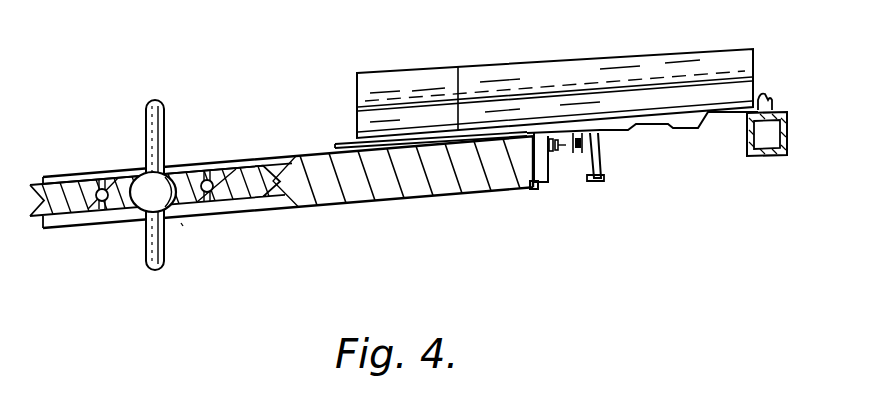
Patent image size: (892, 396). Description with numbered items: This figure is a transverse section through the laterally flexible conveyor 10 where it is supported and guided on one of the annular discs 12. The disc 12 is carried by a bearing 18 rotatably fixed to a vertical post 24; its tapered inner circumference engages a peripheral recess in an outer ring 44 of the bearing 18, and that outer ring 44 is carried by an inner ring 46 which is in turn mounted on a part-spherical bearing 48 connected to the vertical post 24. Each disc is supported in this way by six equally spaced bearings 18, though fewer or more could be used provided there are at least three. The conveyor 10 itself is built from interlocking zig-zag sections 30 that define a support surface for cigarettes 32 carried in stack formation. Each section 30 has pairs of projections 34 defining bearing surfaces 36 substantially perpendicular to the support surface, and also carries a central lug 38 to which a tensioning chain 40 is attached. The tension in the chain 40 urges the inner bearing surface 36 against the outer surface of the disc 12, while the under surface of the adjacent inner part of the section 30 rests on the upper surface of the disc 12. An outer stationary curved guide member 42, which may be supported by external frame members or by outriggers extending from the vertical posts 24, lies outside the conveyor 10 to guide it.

The conveyor 10 is at (768, 86).
The disc 12 is at (394, 182).
The bearing 18 is at (183, 226).
The vertical post 24 is at (157, 132).
The zig-zag section 30 is at (632, 133).
The cigarettes 32 is at (545, 73).
The projection 34 is at (542, 183).
The bearing surface 36 is at (528, 186).
The central lug 38 is at (563, 155).
The tensioning chain 40 is at (578, 156).
The outer stationary curved guide member 42 is at (770, 158).
The outer ring 44 is at (238, 180).
The inner ring 46 is at (125, 212).
The part-spherical bearing 48 is at (137, 177).